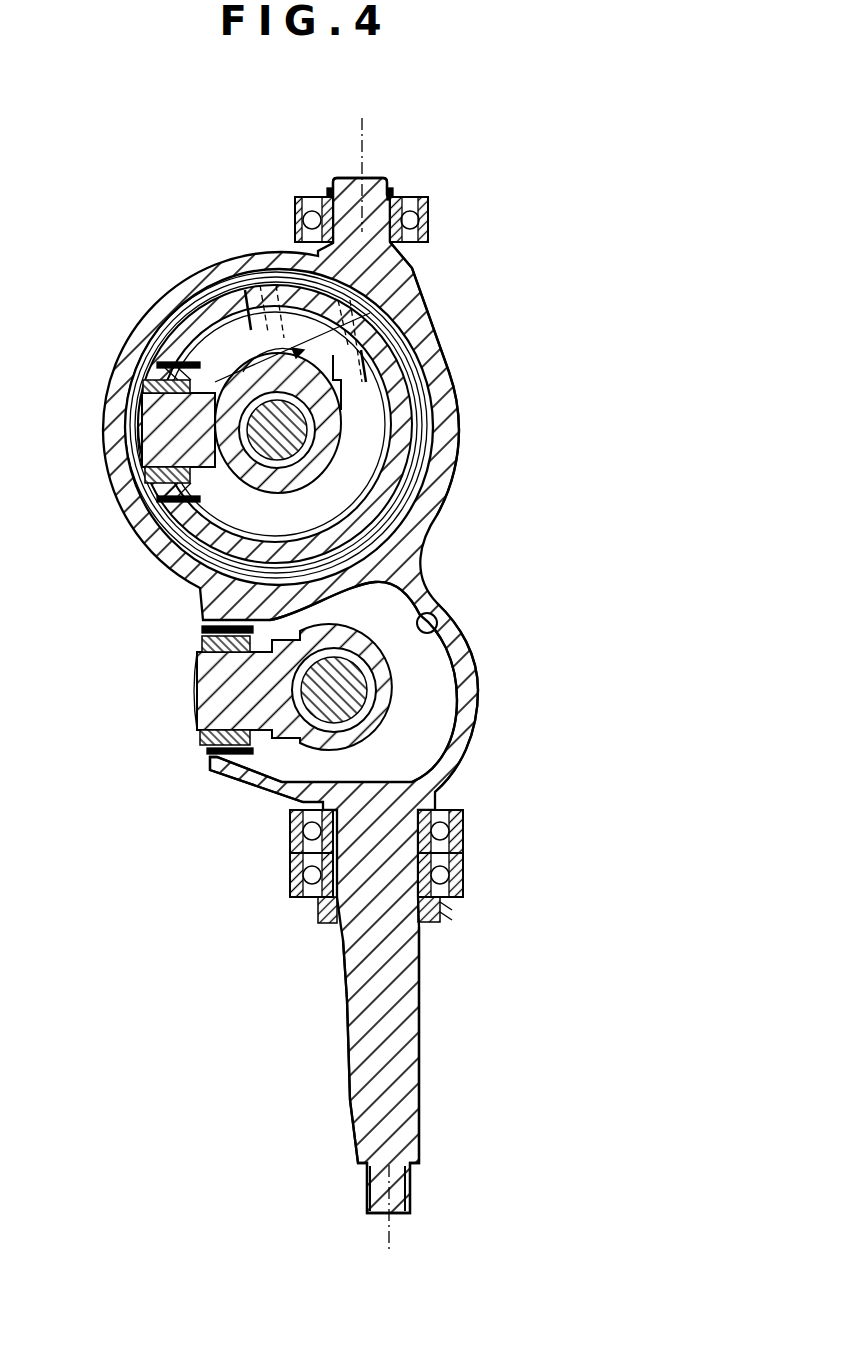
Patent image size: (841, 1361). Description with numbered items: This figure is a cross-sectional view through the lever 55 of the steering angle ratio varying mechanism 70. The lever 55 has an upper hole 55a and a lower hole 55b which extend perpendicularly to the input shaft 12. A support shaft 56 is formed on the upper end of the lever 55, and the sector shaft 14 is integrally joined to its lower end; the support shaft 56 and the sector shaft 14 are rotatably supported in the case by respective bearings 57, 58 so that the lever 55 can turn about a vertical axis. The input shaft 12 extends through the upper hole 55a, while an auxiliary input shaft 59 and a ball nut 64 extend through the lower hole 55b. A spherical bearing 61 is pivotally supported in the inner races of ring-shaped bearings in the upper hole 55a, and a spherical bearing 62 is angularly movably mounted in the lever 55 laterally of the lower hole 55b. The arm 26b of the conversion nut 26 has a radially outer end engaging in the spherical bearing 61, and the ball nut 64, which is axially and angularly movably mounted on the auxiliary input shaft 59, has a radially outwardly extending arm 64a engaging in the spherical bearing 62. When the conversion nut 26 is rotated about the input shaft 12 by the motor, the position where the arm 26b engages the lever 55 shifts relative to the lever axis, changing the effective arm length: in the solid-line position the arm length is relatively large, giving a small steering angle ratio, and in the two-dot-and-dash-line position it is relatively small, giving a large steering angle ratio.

The input shaft 12 is at (300, 430).
The sector shaft 14 is at (348, 1030).
The conversion nut 26 is at (240, 393).
The arm 26b is at (173, 425).
The lever 55 is at (430, 508).
The upper hole 55a is at (436, 328).
The lower hole 55b is at (443, 637).
The support shaft 56 is at (350, 180).
The bearing 57 is at (297, 217).
The bearing 58 is at (447, 868).
The auxiliary input shaft 59 is at (376, 668).
The spherical bearing 61 is at (125, 507).
The spherical bearing 62 is at (210, 737).
The ball nut 64 is at (290, 747).
The arm 64a is at (220, 687).
The steering angle ratio varying mechanism 70 is at (118, 590).